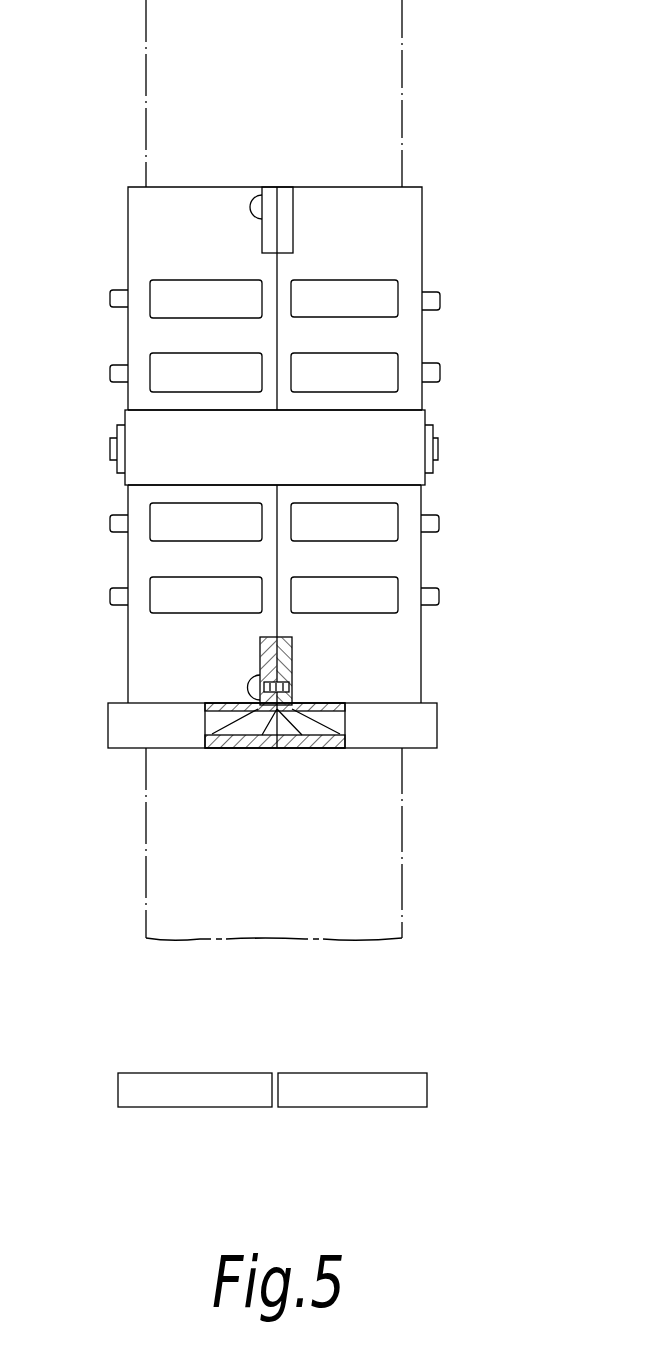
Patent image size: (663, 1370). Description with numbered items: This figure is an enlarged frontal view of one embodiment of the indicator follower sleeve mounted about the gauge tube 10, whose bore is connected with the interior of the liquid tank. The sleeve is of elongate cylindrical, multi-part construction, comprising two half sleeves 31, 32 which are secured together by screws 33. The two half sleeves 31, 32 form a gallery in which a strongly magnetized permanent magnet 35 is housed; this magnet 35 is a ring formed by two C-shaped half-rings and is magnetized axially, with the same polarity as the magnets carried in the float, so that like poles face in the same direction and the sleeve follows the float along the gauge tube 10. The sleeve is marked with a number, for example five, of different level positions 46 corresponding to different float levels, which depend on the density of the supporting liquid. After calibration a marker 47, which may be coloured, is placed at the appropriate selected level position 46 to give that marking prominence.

The gauge tube 10 is at (388, 78).
The half sleeve 31 is at (127, 208).
The half sleeve 32 is at (424, 220).
The screws 33 is at (252, 207).
The permanent magnet 35 is at (323, 727).
The level positions 46 is at (374, 367).
The marker 47 is at (381, 432).